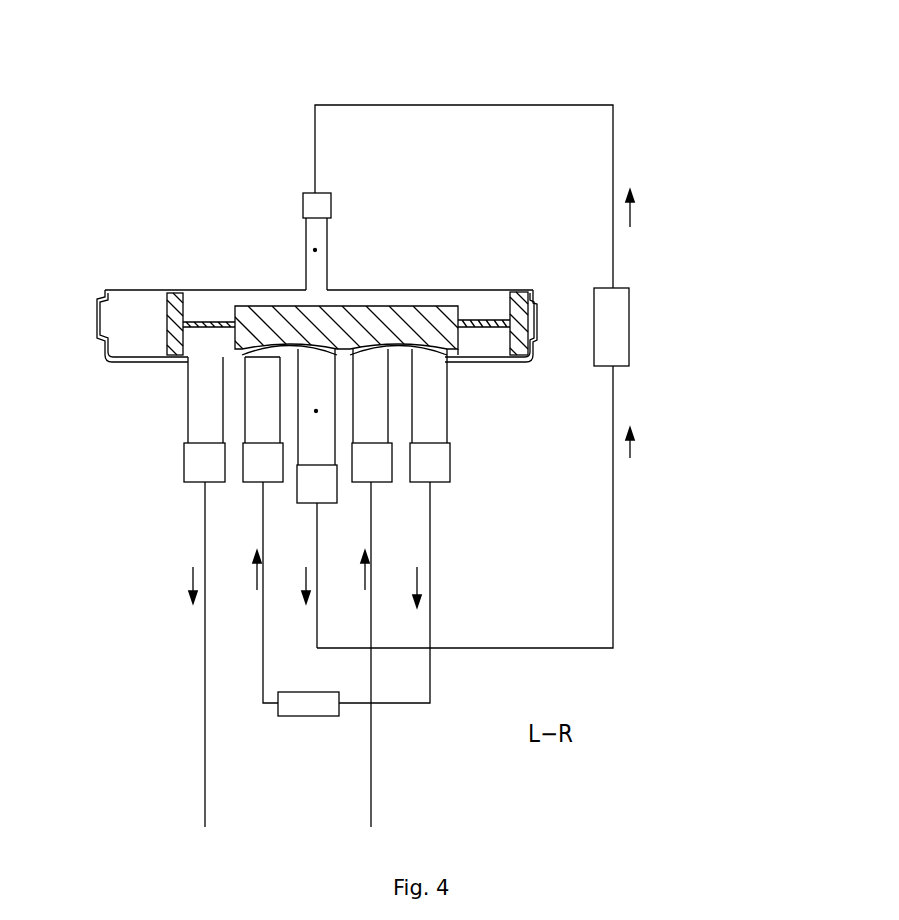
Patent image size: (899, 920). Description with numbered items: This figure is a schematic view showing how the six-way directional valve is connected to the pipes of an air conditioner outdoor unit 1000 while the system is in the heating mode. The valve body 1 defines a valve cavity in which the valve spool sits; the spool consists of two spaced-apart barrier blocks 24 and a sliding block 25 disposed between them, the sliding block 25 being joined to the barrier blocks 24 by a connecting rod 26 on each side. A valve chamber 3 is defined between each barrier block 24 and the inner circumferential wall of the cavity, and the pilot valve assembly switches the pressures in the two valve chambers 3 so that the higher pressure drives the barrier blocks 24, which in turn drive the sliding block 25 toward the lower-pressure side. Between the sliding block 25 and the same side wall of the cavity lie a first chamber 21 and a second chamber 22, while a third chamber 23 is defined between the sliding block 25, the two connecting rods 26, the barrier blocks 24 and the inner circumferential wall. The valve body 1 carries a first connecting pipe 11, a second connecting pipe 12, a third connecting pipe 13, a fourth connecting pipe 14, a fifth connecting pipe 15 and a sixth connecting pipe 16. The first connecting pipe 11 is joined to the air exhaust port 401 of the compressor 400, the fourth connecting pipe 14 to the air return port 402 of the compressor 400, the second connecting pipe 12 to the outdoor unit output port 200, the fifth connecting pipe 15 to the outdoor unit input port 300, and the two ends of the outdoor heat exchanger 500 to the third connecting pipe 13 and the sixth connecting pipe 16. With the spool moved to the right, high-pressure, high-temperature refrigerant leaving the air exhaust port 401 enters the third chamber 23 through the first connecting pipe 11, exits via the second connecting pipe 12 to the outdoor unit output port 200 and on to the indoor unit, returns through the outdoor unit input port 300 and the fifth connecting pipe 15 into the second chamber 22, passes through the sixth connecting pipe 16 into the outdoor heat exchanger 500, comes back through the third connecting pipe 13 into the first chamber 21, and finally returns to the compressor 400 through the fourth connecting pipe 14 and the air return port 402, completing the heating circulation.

The outdoor unit 1000 is at (464, 333).
The valve body 1 is at (145, 297).
The valve chamber 3 is at (130, 345).
The first connecting pipe 11 is at (315, 275).
The second connecting pipe 12 is at (190, 477).
The third connecting pipe 13 is at (272, 477).
The fourth connecting pipe 14 is at (325, 497).
The fifth connecting pipe 15 is at (382, 477).
The sixth connecting pipe 16 is at (440, 477).
The first chamber 21 is at (280, 352).
The second chamber 22 is at (417, 352).
The third chamber 23 is at (415, 300).
The barrier block 24 is at (173, 327).
The sliding block 25 is at (282, 340).
The connecting rod 26 is at (475, 322).
The outdoor unit output port 200 is at (204, 712).
The outdoor unit input port 300 is at (372, 748).
The compressor 400 is at (620, 352).
The air exhaust port 401 is at (613, 265).
The air return port 402 is at (613, 398).
The outdoor heat exchanger 500 is at (308, 716).